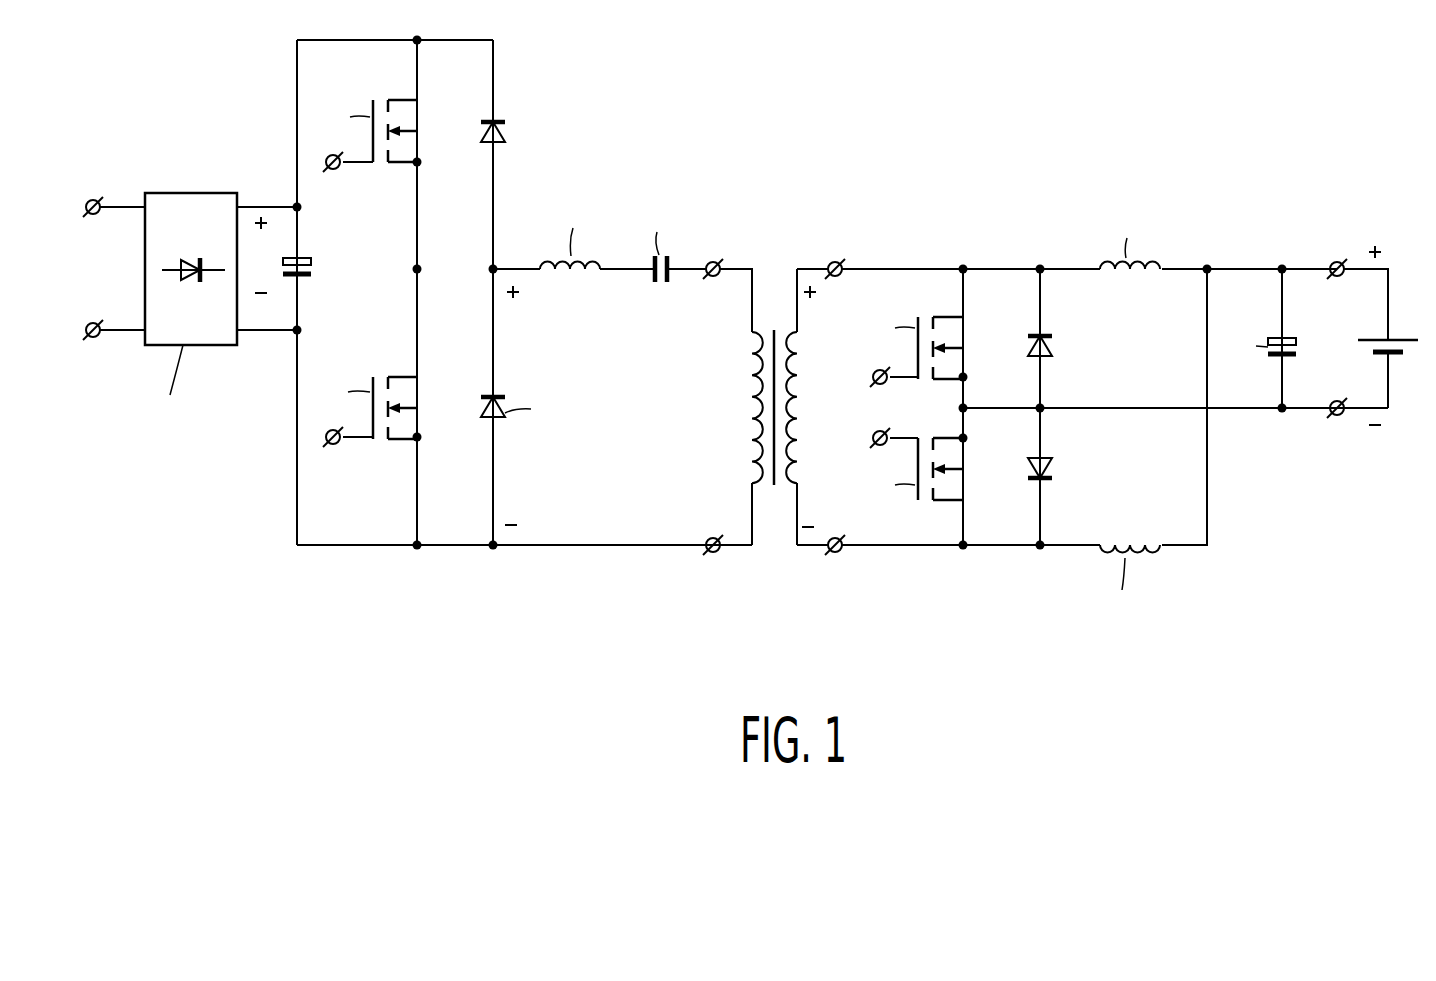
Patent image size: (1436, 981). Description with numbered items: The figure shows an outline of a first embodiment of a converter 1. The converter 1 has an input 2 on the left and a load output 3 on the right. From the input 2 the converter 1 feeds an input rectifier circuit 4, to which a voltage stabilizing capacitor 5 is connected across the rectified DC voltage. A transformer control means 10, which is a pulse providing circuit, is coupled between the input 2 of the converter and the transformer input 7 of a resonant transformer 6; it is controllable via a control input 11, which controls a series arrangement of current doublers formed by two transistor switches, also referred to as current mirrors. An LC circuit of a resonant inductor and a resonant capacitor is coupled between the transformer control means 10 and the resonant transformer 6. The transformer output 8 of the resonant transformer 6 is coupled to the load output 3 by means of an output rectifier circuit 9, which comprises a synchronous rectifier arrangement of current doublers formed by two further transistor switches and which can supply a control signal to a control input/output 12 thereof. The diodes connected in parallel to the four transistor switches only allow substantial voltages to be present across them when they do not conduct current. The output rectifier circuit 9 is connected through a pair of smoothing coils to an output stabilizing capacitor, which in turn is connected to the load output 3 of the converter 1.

The converter 1 is at (704, 107).
The input 2 is at (93, 217).
The load output 3 is at (1337, 280).
The input rectifier circuit 4 is at (187, 193).
The voltage stabilizing capacitor 5 is at (312, 270).
The resonant transformer 6 is at (774, 272).
The transformer input 7 is at (713, 260).
The transformer output 8 is at (835, 260).
The output rectifier circuit 9 is at (1003, 196).
The transformer control means 10 is at (534, 76).
The control input 11 is at (333, 172).
The control input/output 12 is at (877, 392).